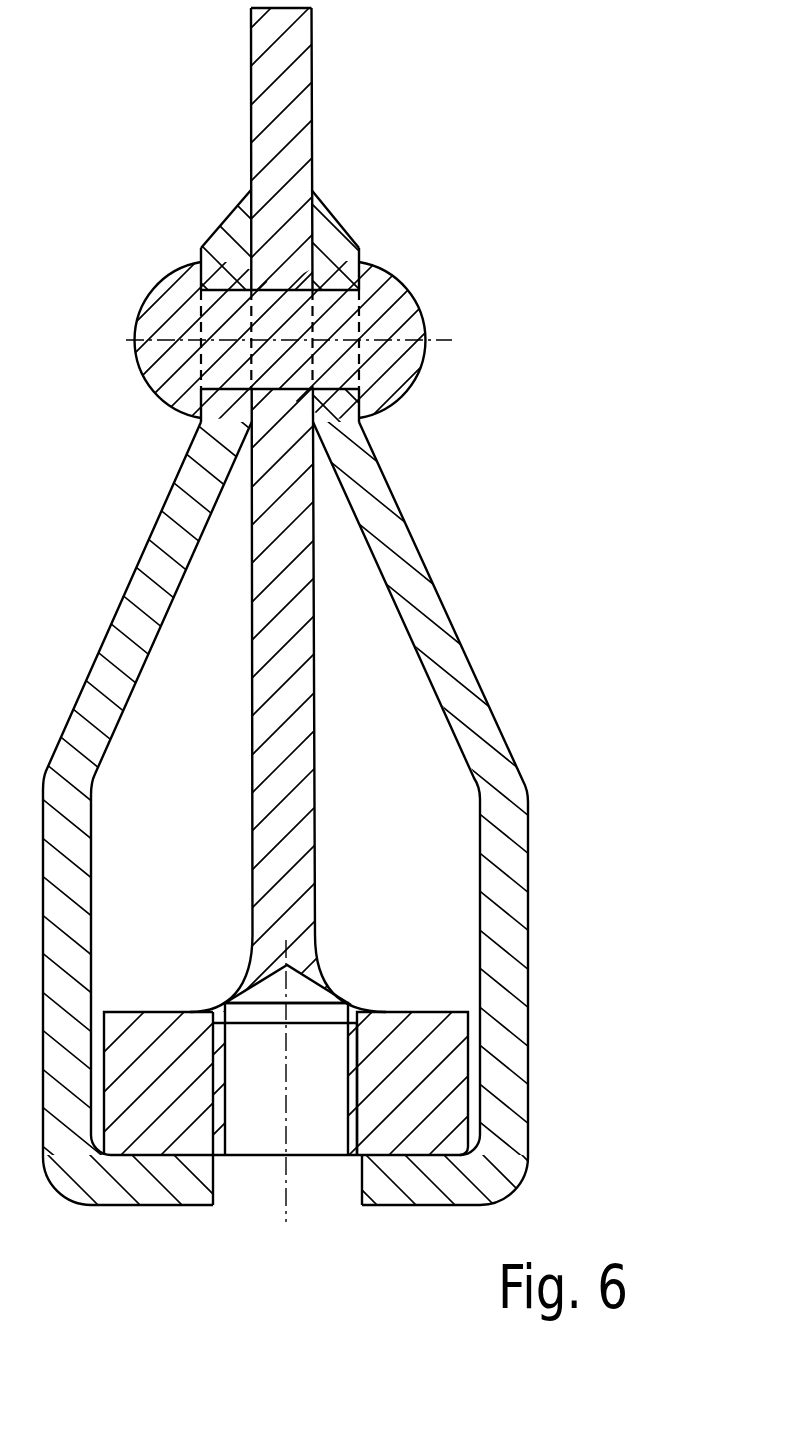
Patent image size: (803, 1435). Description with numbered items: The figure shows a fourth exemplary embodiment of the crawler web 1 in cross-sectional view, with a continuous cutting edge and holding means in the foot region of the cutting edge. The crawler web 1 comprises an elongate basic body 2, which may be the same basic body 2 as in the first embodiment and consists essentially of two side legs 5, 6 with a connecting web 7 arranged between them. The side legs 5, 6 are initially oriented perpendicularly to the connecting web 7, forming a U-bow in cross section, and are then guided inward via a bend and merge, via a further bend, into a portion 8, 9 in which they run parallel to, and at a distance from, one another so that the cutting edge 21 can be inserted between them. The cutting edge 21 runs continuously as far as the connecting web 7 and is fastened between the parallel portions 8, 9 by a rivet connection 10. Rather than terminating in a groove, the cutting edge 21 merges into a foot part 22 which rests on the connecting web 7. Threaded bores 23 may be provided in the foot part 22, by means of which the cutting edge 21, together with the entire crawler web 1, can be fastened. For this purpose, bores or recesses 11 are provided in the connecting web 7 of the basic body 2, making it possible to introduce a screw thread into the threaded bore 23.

The crawler web 1 is at (602, 501).
The basic body 2 is at (625, 831).
The side leg 5 is at (468, 677).
The side leg 6 is at (112, 647).
The connecting web 7 is at (412, 1187).
The portion 8 is at (340, 243).
The portion 9 is at (230, 233).
The rivet connection 10 is at (405, 312).
The bore or recess 11 is at (247, 1188).
The cutting edge 21 is at (297, 87).
The foot part 22 is at (452, 1113).
The threaded bore 23 is at (347, 1048).